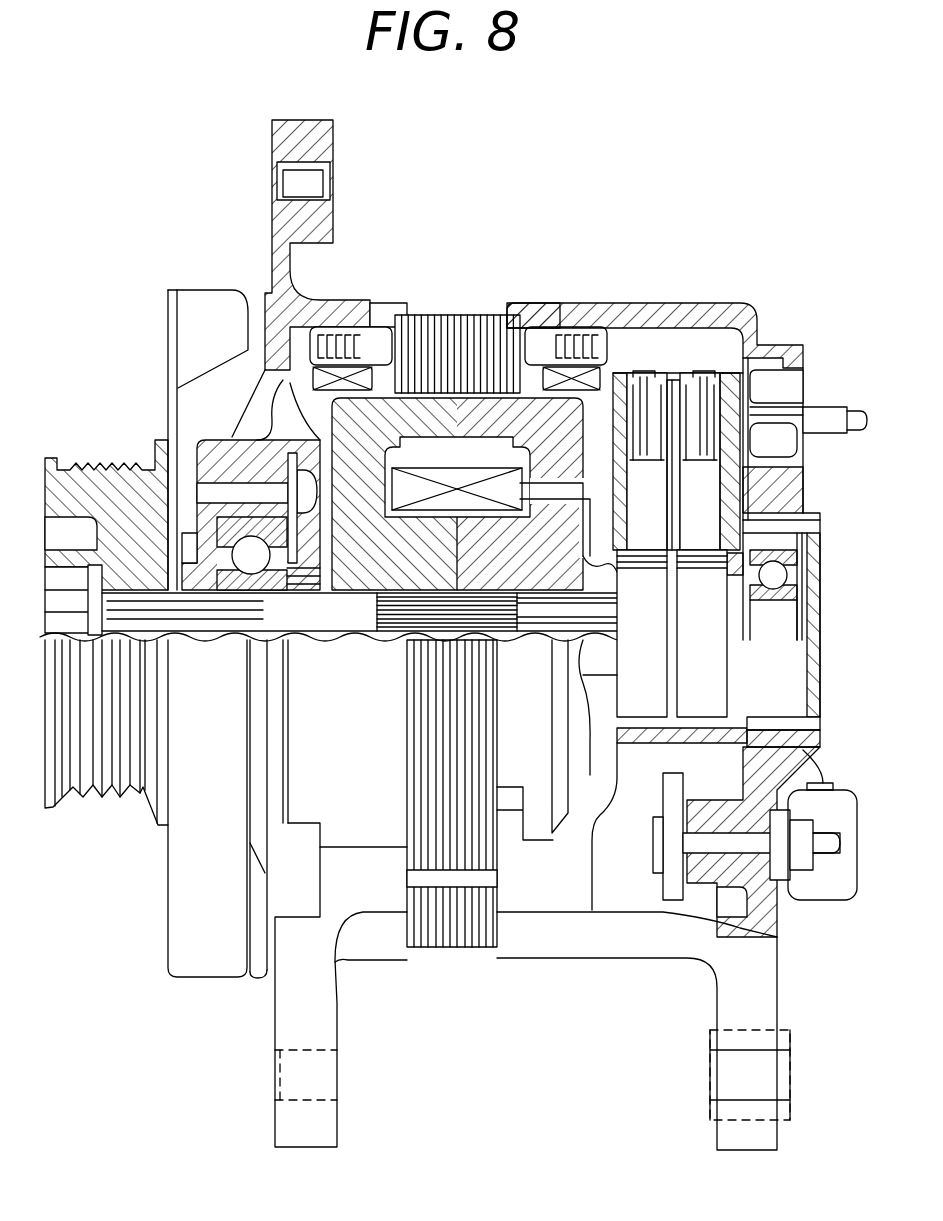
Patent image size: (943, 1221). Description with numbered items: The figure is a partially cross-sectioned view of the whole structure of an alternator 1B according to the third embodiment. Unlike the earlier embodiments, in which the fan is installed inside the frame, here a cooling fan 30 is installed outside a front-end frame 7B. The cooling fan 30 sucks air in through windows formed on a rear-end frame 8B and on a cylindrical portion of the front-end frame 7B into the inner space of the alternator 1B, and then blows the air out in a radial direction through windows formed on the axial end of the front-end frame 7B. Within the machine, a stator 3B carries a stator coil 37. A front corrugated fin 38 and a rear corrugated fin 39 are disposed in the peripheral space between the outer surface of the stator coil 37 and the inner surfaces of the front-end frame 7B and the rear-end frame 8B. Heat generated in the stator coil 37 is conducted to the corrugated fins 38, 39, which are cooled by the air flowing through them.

The alternator 1B is at (505, 180).
The stator 3B is at (462, 304).
The front-end frame 7B is at (277, 232).
The rear-end frame 8B is at (723, 313).
The cooling fan 30 is at (168, 333).
The stator coil 37 is at (360, 388).
The front corrugated fin 38 is at (370, 392).
The rear corrugated fin 39 is at (556, 320).